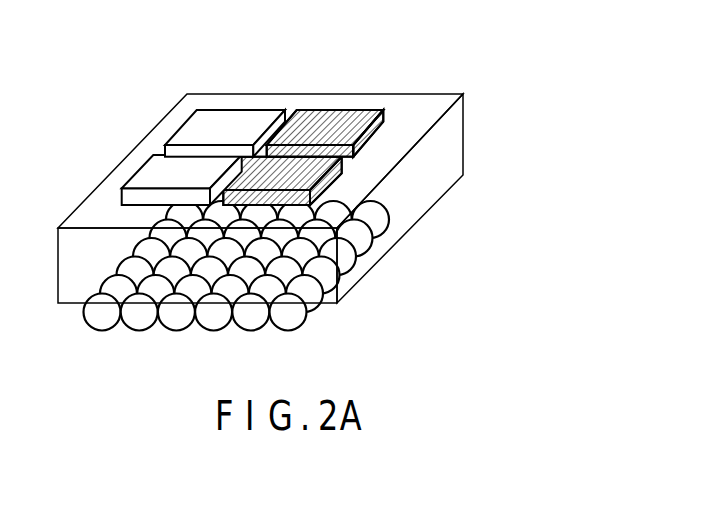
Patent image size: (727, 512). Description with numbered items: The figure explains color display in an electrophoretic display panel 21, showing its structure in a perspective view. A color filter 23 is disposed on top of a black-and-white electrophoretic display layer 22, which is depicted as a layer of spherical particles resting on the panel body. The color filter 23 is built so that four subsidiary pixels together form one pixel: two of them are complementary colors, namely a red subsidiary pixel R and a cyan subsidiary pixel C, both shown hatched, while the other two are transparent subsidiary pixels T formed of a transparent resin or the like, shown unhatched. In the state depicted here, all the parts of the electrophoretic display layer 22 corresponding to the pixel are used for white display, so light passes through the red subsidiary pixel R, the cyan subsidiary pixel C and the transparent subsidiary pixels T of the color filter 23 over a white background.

The electrophoretic display panel 21 is at (578, 130).
The black-and-white electrophoretic display layer 22 is at (100, 348).
The color filter 23 is at (287, 47).
The transparent subsidiary pixel T is at (200, 127).
The red subsidiary pixel R is at (370, 79).
The cyan subsidiary pixel C is at (400, 195).